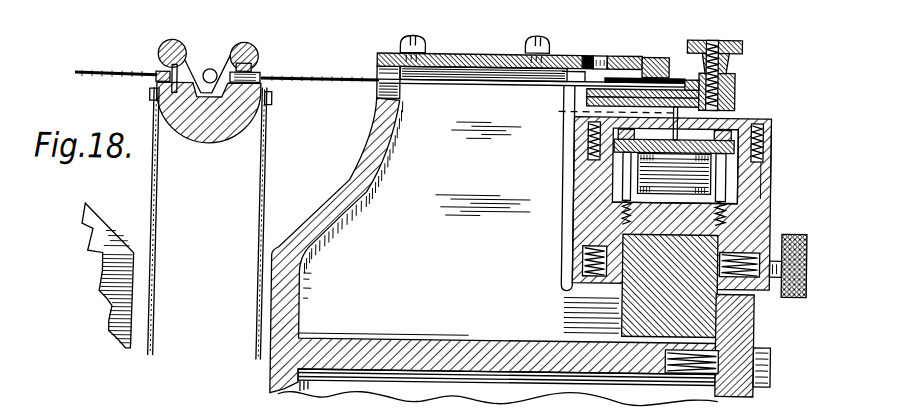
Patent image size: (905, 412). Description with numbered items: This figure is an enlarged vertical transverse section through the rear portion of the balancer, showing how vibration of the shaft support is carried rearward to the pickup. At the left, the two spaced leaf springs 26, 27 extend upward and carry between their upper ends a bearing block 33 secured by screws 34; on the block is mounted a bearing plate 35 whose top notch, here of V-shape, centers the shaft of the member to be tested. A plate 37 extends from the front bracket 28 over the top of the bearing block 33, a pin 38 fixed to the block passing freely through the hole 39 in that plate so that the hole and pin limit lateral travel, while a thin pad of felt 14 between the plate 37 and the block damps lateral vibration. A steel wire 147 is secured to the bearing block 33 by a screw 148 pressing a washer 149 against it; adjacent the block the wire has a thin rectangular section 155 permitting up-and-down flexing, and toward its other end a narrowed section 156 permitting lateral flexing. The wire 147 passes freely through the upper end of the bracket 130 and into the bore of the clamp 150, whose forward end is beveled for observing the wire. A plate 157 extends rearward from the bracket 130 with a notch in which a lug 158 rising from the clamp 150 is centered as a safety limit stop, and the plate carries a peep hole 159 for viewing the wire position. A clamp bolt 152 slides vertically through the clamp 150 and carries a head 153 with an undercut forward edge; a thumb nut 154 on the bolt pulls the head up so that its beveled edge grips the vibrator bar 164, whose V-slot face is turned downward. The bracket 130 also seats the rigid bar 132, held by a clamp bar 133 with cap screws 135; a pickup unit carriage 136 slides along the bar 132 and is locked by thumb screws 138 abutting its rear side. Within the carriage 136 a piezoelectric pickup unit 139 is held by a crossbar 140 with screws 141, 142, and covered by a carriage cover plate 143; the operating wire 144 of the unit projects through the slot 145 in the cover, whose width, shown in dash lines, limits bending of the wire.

The pad of felt 14 is at (155, 81).
The leaf spring 26 is at (156, 202).
The leaf spring 27 is at (258, 202).
The front bracket 28 is at (113, 248).
The bearing block 33 is at (193, 140).
The screw 34 is at (148, 99).
The bearing plate 35 is at (166, 50).
The plate 37 is at (93, 82).
The pin 38 is at (195, 52).
The hole 39 is at (158, 76).
The bracket 130 is at (351, 182).
The rigid bar 132 is at (622, 300).
The clamp bar 133 is at (754, 321).
The cap screw 135 is at (766, 358).
The pickup unit carriage 136 is at (763, 199).
The thumb screw 138 is at (773, 292).
The pickup unit 139 is at (771, 183).
The crossbar 140 is at (573, 163).
The screw 141 is at (622, 170).
The screw 142 is at (771, 165).
The carriage cover plate 143 is at (762, 119).
The pickup unit operating wire 144 is at (677, 113).
The slot 145 is at (560, 112).
The steel wire 147 is at (450, 78).
The screw 148 is at (246, 65).
The washer 149 is at (238, 63).
The clamp 150 is at (733, 73).
The clamp bolt 152 is at (712, 37).
The head 153 is at (727, 101).
The thumb nut 154 is at (738, 41).
The reduced rectangular section 155 is at (310, 83).
The section 156 is at (620, 86).
The plate 157 is at (493, 54).
The lug 158 is at (652, 57).
The peep hole 159 is at (593, 55).
The vibrator bar 164 is at (566, 96).